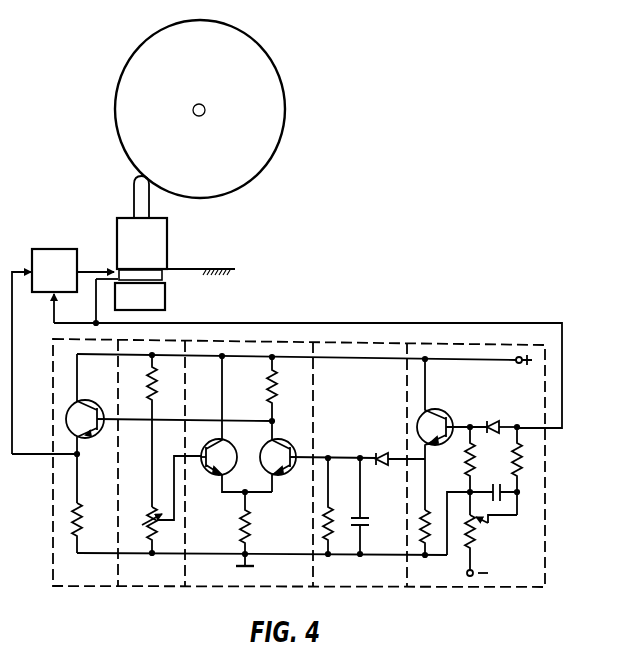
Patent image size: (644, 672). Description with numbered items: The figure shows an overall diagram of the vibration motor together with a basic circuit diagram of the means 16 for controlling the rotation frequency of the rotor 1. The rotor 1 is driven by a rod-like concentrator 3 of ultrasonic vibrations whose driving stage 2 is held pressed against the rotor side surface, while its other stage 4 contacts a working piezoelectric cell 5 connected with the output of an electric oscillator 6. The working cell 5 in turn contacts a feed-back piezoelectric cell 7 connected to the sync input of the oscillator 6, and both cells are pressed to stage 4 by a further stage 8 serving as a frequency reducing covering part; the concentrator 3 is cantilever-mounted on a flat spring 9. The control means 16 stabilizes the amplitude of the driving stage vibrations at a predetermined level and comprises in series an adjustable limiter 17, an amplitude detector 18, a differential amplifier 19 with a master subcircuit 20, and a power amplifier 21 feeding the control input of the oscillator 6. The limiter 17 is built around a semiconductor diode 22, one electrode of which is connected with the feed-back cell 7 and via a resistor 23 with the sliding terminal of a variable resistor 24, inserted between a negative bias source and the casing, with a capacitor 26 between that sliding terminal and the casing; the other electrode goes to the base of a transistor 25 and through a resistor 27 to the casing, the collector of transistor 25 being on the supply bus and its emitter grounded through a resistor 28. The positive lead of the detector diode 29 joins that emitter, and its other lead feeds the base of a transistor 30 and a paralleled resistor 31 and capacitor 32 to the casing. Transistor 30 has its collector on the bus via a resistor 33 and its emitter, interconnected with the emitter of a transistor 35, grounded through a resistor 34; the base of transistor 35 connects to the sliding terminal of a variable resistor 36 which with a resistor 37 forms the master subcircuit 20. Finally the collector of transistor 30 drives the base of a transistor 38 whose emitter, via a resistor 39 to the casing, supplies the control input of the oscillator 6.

The rotor 1 is at (115, 107).
The driving stage 2 is at (134, 183).
The rod-like concentrator 3 is at (109, 214).
The stage 4 is at (168, 222).
The working piezoelectric cell 5 is at (163, 274).
The electric oscillator 6 is at (54, 270).
The feed-back piezoelectric cell 7 is at (123, 278).
The stage 8 is at (166, 298).
The flat spring 9 is at (205, 268).
The means for control of rotation frequency 16 is at (559, 455).
The adjustable limiter 17 is at (455, 590).
The amplitude detector 18 is at (359, 590).
The differential amplifier 19 is at (208, 590).
The master subcircuit 20 is at (149, 590).
The power amplifier 21 is at (86, 590).
The semiconductor diode 22 is at (497, 420).
The resistor 23 is at (519, 474).
The variable resistor 24 is at (478, 543).
The transistor 25 is at (438, 409).
The capacitor 26 is at (494, 483).
The resistor 27 is at (466, 459).
The resistor 28 is at (420, 537).
The semiconductor diode 29 is at (383, 452).
The transistor 30 is at (292, 444).
The resistor 31 is at (331, 512).
The capacitor 32 is at (366, 517).
The resistor 33 is at (268, 382).
The resistor 34 is at (250, 526).
The transistor 35 is at (232, 445).
The variable resistor 36 is at (150, 512).
The resistor 37 is at (150, 380).
The transistor 38 is at (98, 404).
The resistor 39 is at (80, 511).